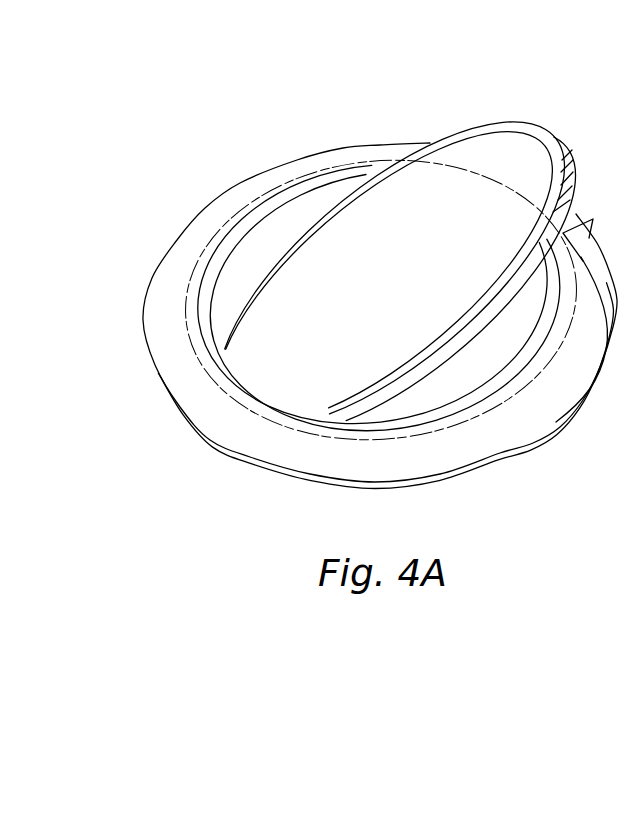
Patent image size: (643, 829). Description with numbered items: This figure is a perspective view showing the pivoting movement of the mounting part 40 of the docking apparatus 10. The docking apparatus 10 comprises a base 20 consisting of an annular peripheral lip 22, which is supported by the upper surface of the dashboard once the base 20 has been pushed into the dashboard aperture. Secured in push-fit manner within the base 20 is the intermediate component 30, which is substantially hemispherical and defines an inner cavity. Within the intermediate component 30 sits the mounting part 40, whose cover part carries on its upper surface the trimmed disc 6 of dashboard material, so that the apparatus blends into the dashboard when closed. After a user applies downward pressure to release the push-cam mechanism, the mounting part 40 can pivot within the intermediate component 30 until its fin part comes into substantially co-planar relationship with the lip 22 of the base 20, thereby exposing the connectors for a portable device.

The docking apparatus 10 is at (280, 119).
The base 20 is at (229, 208).
The annular peripheral lip 22 is at (215, 421).
The intermediate component 30 is at (298, 217).
The disc 6 is at (480, 160).
The mounting part 40 is at (547, 125).